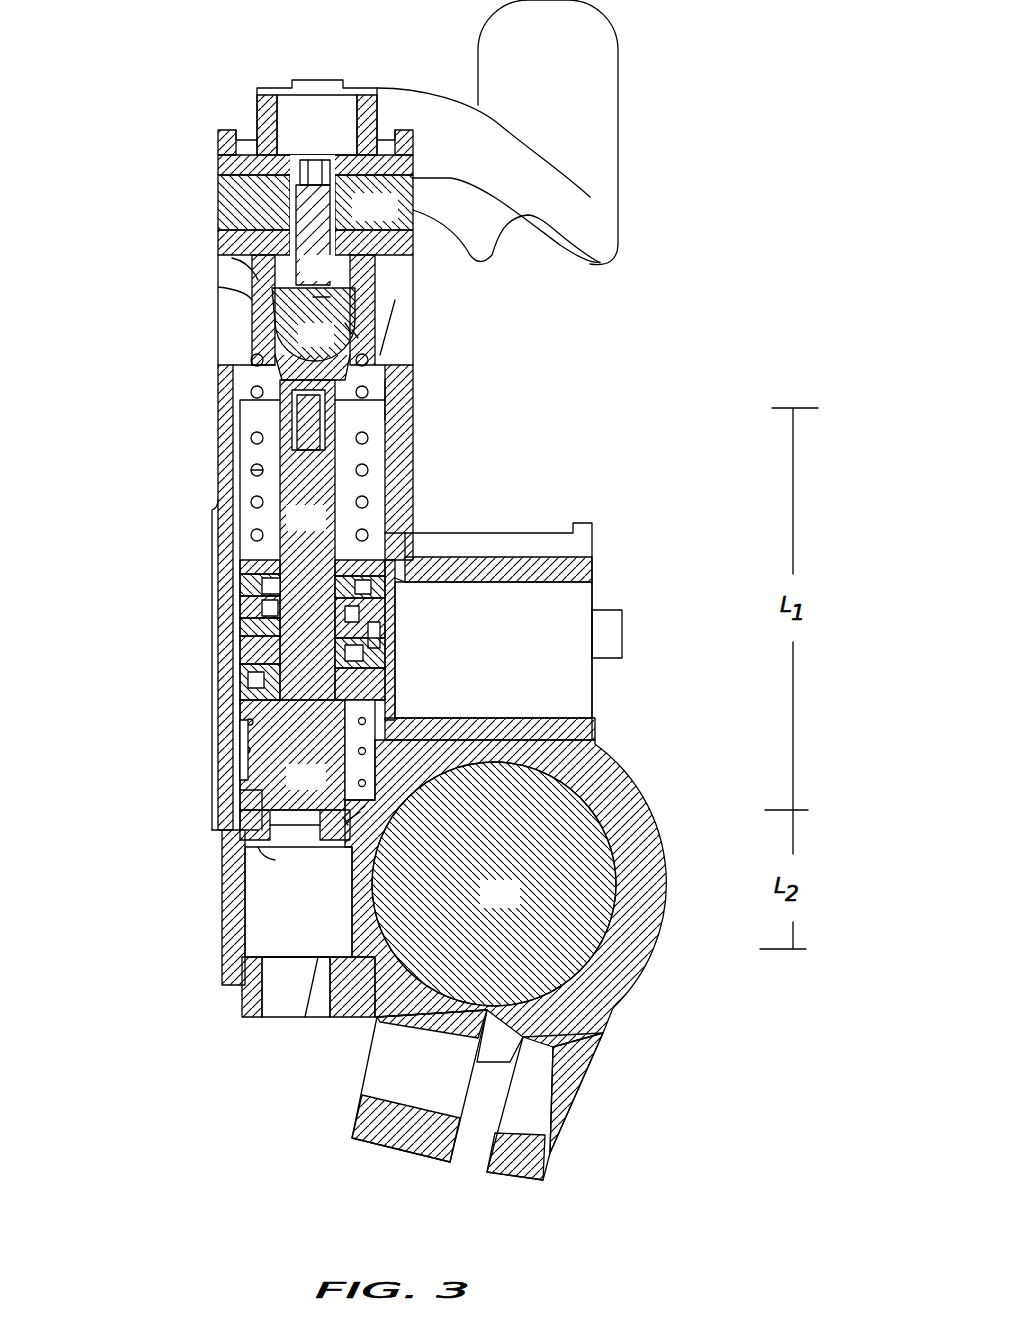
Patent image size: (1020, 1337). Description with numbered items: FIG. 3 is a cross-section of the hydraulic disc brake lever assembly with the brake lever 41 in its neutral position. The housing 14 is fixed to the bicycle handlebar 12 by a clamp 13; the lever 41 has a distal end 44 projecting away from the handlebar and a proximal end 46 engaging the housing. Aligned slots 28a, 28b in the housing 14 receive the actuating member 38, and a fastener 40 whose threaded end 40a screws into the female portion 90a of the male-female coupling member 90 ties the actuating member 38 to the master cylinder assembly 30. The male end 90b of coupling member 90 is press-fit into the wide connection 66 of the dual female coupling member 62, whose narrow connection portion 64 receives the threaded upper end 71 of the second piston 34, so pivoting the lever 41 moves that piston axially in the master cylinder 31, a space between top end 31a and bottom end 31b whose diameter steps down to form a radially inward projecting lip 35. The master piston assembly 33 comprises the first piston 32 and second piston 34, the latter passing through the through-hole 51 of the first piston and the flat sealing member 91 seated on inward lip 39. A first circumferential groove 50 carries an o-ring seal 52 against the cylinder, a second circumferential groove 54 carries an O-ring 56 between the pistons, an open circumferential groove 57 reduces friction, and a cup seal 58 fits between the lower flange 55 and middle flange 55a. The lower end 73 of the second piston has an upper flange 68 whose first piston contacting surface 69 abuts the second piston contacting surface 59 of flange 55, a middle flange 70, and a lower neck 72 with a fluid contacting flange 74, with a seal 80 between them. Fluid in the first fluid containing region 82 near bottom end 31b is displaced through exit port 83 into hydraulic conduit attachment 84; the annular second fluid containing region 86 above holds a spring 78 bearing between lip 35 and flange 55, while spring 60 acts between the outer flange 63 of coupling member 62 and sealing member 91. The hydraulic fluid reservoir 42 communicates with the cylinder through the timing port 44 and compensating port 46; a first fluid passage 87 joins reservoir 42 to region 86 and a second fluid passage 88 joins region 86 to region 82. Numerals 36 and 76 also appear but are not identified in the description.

The bicycle handlebar 12 is at (517, 910).
The clamp 13 is at (583, 1015).
The housing 14 is at (547, 570).
The slot 28a is at (400, 350).
The slot 28b is at (230, 338).
The master cylinder assembly 30 is at (400, 440).
The master cylinder 31 is at (212, 504).
The top end 31a is at (397, 405).
The bottom end 31b is at (228, 958).
The first piston 32 is at (245, 607).
The master piston assembly 33 is at (397, 521).
The second piston 34 is at (322, 531).
The radially inward projecting lip 35 is at (348, 824).
The cap 36 is at (335, 135).
The actuating member 38 is at (390, 221).
The radially inward lip 39 is at (405, 578).
The fastener 40 is at (333, 281).
The externally threaded end 40a is at (313, 297).
The brake lever 41 is at (560, 120).
The hydraulic fluid reservoir 42 is at (572, 630).
The timing port 44 is at (580, 52).
The compensating port 46 is at (392, 640).
The first circumferential groove 50 is at (378, 582).
The through-hole 51 is at (245, 585).
The o-ring seal 52 is at (380, 598).
The second circumferential groove 54 is at (288, 579).
The lower flange 55 is at (387, 713).
The middle flange 55a is at (245, 650).
The O-ring 56 is at (278, 610).
The open circumferential groove 57 is at (245, 634).
The seal 58 is at (338, 660).
The second piston contacting surface 59 is at (242, 722).
The spring 60 is at (252, 471).
The dual female coupling member 62 is at (312, 369).
The outer flange 63 is at (240, 292).
The narrow connection portion 64 is at (248, 440).
The wide connection 66 is at (252, 378).
The upper flange 68 is at (238, 730).
The first piston contacting surface 69 is at (275, 712).
The middle flange 70 is at (238, 790).
The upper end 71 is at (312, 427).
The lower neck 72 is at (315, 847).
The lower end 73 is at (322, 790).
The fluid contacting flange 74 is at (265, 852).
The passage 76 is at (360, 810).
The spring 78 is at (240, 750).
The seal 80 is at (252, 832).
The first fluid containing region 82 is at (297, 907).
The exit port 83 is at (305, 1020).
The hydraulic conduit attachment 84 is at (298, 990).
The second fluid containing region 86 is at (373, 778).
The first fluid passage 87 is at (393, 683).
The second fluid passage 88 is at (343, 818).
The male-female coupling member 90 is at (333, 348).
The female portion 90a is at (348, 325).
The male end 90b is at (345, 330).
The flat sealing member 91 is at (250, 568).